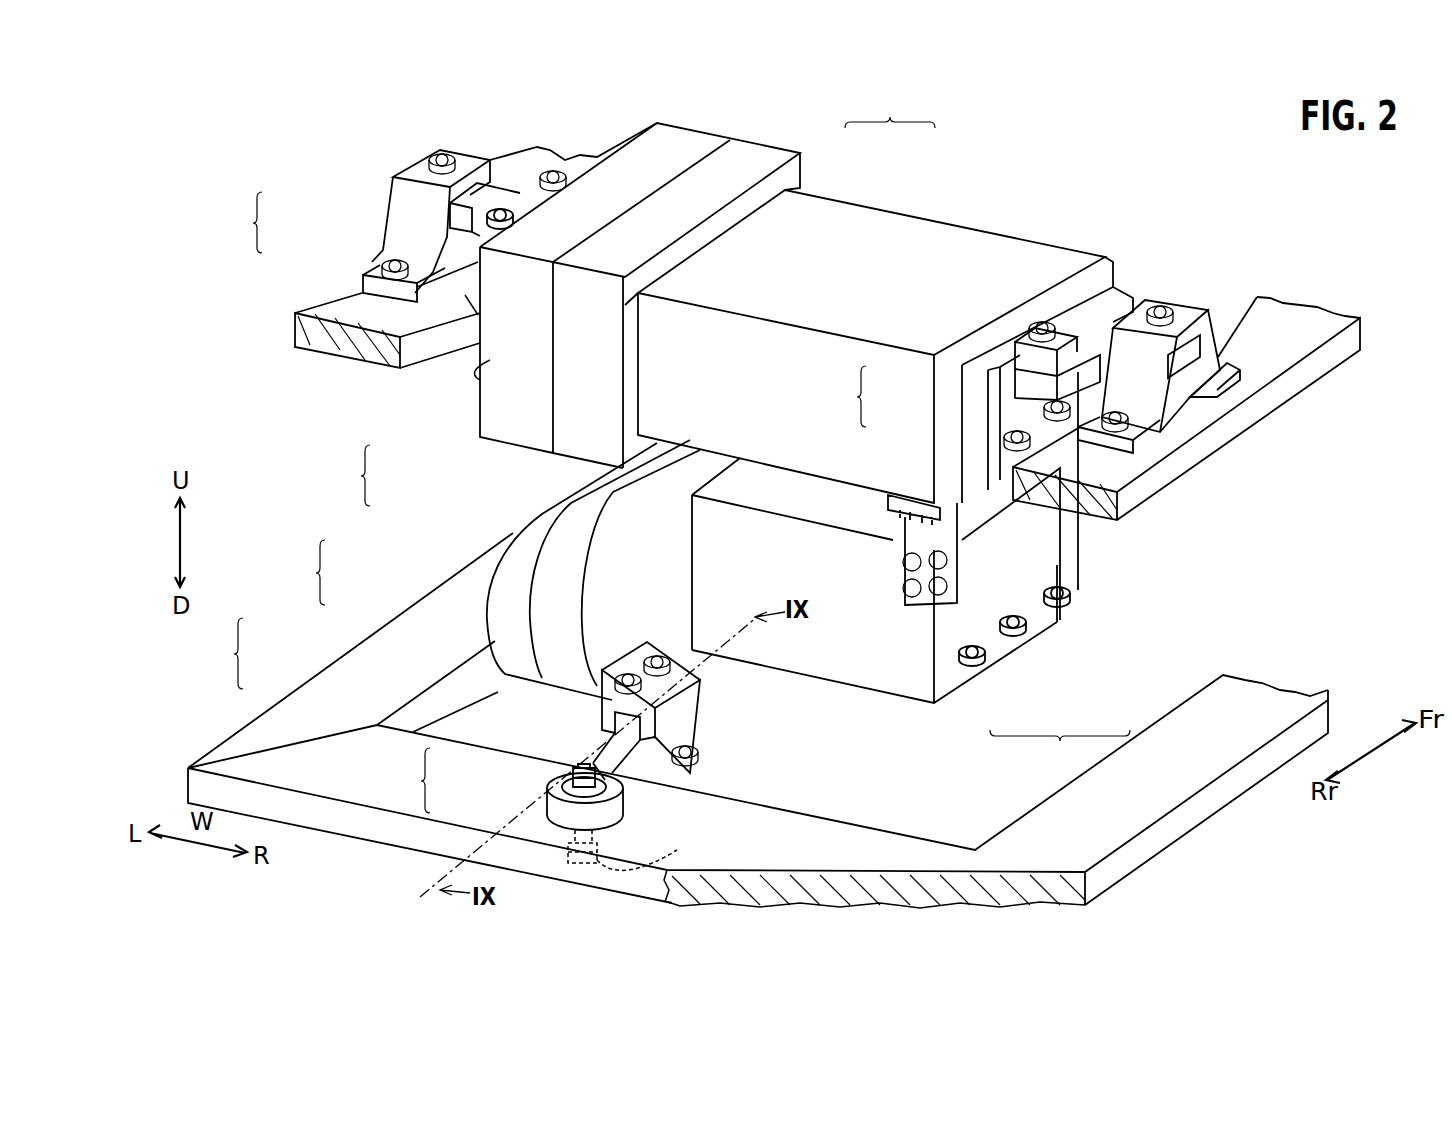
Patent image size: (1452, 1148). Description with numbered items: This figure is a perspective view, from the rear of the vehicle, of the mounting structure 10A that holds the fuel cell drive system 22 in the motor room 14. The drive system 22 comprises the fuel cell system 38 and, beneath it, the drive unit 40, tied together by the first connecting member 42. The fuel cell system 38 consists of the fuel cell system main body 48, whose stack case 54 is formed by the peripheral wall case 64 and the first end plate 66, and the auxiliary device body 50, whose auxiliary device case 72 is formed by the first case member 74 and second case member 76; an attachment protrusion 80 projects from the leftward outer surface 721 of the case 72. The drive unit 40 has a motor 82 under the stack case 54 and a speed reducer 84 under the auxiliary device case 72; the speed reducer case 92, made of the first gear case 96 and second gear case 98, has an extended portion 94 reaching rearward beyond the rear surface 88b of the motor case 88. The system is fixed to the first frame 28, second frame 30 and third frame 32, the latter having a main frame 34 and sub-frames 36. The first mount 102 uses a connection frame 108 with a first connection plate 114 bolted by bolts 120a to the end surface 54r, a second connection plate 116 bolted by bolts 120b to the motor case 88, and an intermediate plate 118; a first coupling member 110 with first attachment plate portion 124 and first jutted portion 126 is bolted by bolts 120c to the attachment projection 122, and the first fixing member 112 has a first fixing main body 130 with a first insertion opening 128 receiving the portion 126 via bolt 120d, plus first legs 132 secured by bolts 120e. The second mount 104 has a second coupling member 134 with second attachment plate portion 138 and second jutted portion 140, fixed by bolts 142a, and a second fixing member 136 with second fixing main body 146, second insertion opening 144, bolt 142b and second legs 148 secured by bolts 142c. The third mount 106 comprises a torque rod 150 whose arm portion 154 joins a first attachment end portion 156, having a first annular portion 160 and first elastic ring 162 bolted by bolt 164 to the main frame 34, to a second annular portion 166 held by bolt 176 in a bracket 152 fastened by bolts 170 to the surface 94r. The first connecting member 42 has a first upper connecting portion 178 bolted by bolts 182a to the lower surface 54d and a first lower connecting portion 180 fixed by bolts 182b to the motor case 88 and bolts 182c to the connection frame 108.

The mounting structure 10A is at (1152, 190).
The motor room 14 is at (1212, 632).
The fuel cell drive system 22 is at (1001, 172).
The first frame 28 is at (1333, 358).
The second frame 30 is at (300, 328).
The third frame 32 is at (1273, 804).
The main frame 34 is at (838, 832).
The sub-frames 36 is at (490, 540).
The fuel cell system 38 is at (890, 108).
The drive unit 40 is at (307, 572).
The first connecting member 42 is at (916, 626).
The fuel cell system main body 48 is at (935, 181).
The auxiliary device body 50 is at (822, 151).
The stack case 54 is at (1026, 229).
The lower surface 54d is at (782, 470).
The end surface 54r is at (1108, 273).
The peripheral wall case 64 is at (958, 240).
The first end plate 66 is at (1080, 200).
The auxiliary device case 72 is at (566, 314).
The outer surface 721 is at (482, 362).
The first case member 74 is at (520, 470).
The second case member 76 is at (585, 445).
The attachment protrusion 80 is at (470, 310).
The motor 82 is at (680, 582).
The speed reducer 84 is at (473, 593).
The motor case 88 is at (864, 690).
The rear surface 88b is at (842, 668).
The speed reducer case 92 is at (224, 653).
The extended portion 94 is at (505, 540).
The surface 94r is at (690, 543).
The first gear case 96 is at (545, 650).
The second gear case 98 is at (500, 628).
The first mount 102 is at (1226, 222).
The second mount 104 is at (547, 142).
The third mount 106 is at (497, 819).
The connection frame 108 is at (1044, 615).
The first coupling member 110 is at (959, 377).
The first fixing member 112 is at (1195, 288).
The first connection plate 114 is at (1080, 600).
The second connection plate 116 is at (995, 640).
The intermediate plate 118 is at (1012, 565).
The bolts 120a is at (1050, 412).
The bolts 120b is at (985, 610).
The bolts 120c is at (1045, 320).
The bolt 120d is at (1160, 300).
The bolt 120e is at (1117, 428).
The attachment projection 122 is at (1067, 382).
The first attachment plate portion 124 is at (1027, 357).
The first jutted portion 126 is at (1087, 347).
The first insertion opening 128 is at (1205, 345).
The first fixing main body 130 is at (1080, 380).
The first legs 132 is at (1225, 382).
The second coupling member 134 is at (237, 222).
The second fixing member 136 is at (362, 160).
The second attachment plate portion 138 is at (430, 240).
The second jutted portion 140 is at (460, 215).
The bolts 142a is at (573, 185).
The bolt 142b is at (443, 150).
The bolt 142c is at (395, 272).
The second insertion opening 144 is at (490, 175).
The second fixing main body 146 is at (420, 165).
The second legs 148 is at (370, 293).
The torque rod 150 is at (580, 731).
The bracket 152 is at (700, 700).
The arm portion 154 is at (600, 765).
The first attachment end portion 156 is at (410, 780).
The first annular portion 160 is at (550, 800).
The first elastic ring 162 is at (570, 776).
The bolt 164 is at (677, 851).
The second annular portion 166 is at (650, 770).
The bolts 170 is at (655, 655).
The bolt 176 is at (698, 750).
The first upper connecting portion 178 is at (895, 497).
The first lower connecting portion 180 is at (905, 545).
The bolts 182a is at (918, 520).
The bolts 182b is at (910, 568).
The bolts 182c is at (940, 590).